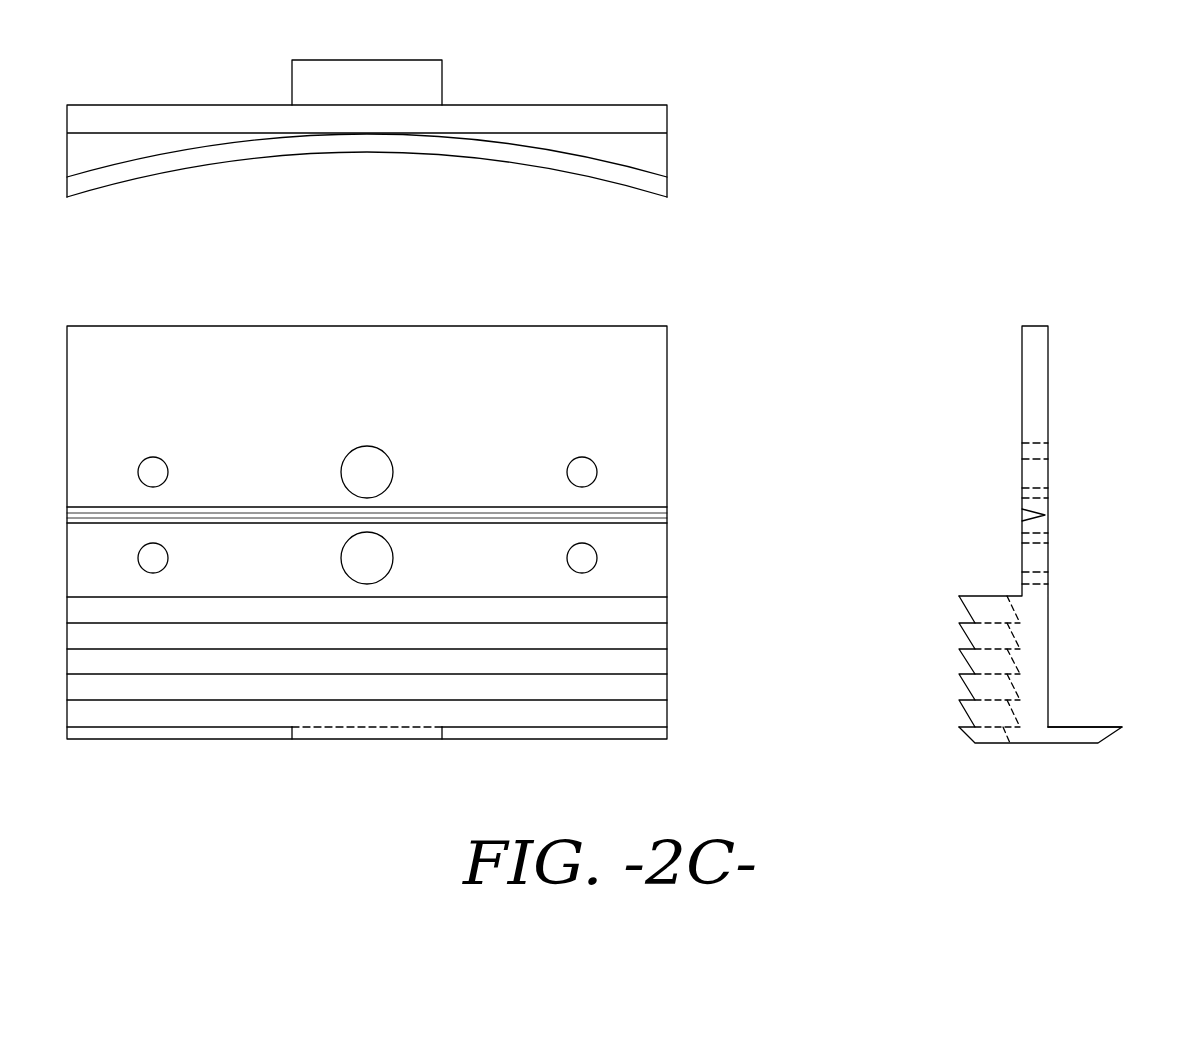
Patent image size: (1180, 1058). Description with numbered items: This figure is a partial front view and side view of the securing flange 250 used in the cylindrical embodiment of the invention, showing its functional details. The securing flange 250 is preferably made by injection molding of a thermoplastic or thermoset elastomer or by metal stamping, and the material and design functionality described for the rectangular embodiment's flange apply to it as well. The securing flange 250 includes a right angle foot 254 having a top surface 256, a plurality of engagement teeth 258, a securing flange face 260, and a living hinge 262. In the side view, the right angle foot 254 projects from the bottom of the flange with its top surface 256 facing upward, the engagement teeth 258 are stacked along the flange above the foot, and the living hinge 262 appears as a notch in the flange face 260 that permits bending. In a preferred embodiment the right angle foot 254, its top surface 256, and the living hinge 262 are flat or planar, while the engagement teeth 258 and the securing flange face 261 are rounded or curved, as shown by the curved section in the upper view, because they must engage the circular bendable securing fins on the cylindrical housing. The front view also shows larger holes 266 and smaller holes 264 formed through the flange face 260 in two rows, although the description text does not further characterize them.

The securing flange 250 is at (1041, 156).
The right angle foot 254 is at (443, 78).
The top surface 256 is at (1075, 727).
The engagement teeth 258 is at (940, 739).
The securing flange face 260 is at (557, 105).
The securing flange face 261 is at (538, 170).
The living hinge 262 is at (1022, 519).
The small holes 264 is at (597, 558).
The large holes 266 is at (367, 445).